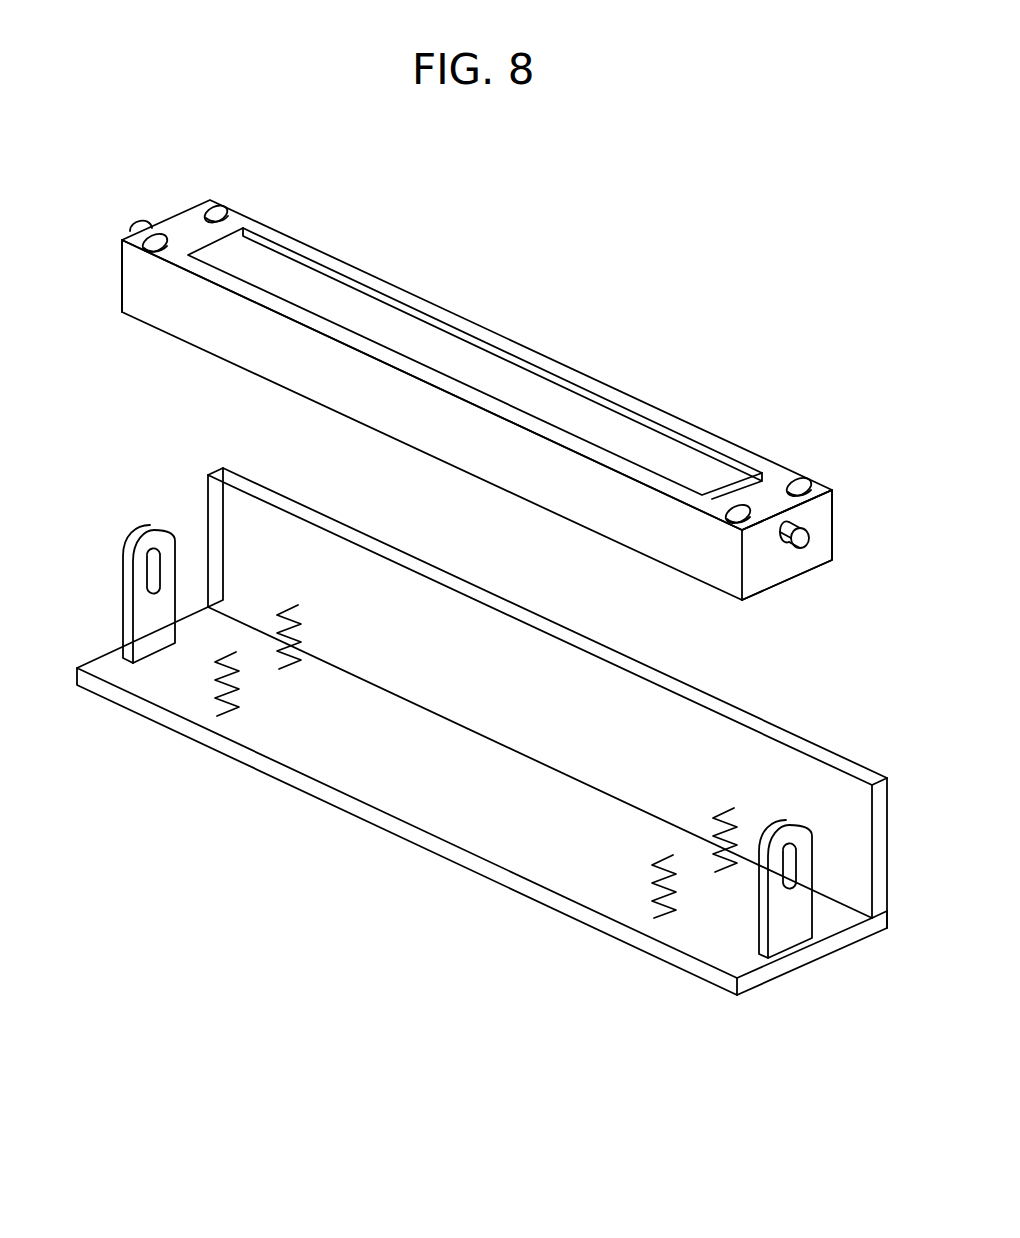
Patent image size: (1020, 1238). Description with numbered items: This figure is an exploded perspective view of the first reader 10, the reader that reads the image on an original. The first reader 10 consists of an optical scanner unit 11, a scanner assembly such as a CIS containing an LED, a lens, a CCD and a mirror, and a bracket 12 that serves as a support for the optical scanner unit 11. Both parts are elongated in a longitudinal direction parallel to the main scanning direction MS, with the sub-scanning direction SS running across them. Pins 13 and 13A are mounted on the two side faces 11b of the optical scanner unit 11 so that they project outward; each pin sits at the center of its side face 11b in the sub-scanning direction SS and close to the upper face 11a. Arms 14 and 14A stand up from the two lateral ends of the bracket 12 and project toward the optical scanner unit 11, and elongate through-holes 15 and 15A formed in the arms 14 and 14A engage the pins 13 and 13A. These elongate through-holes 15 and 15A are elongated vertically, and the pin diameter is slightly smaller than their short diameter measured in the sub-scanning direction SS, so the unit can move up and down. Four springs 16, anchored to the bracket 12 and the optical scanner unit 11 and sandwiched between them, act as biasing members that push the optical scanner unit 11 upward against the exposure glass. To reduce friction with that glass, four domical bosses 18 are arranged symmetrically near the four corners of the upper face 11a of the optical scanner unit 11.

The first reader 10 is at (584, 284).
The optical scanner unit 11 is at (361, 266).
The upper face 11a is at (240, 233).
The side face 11b is at (147, 272).
The bracket 12 is at (718, 731).
The pin 13 is at (810, 537).
The pin 13A is at (134, 224).
The arm 14 is at (782, 918).
The arm 14A is at (144, 612).
The elongate through-hole 15 is at (798, 862).
The elongate through-hole 15A is at (150, 560).
The spring 16 is at (297, 613).
The domical boss 18 is at (159, 234).
The main scanning direction MS is at (437, 889).
The sub-scanning direction SS is at (870, 960).